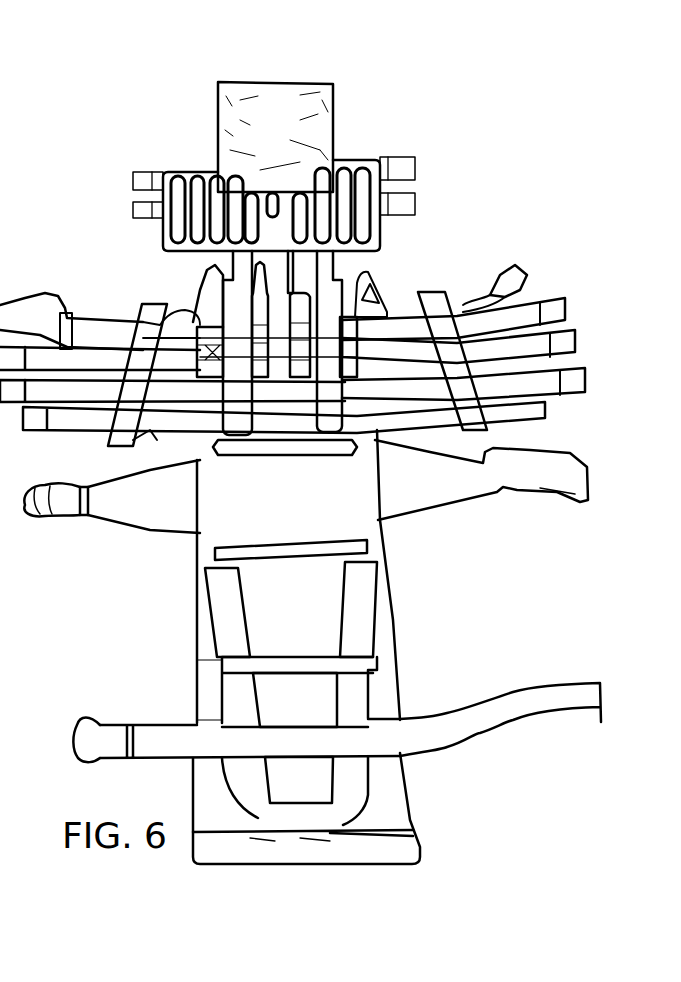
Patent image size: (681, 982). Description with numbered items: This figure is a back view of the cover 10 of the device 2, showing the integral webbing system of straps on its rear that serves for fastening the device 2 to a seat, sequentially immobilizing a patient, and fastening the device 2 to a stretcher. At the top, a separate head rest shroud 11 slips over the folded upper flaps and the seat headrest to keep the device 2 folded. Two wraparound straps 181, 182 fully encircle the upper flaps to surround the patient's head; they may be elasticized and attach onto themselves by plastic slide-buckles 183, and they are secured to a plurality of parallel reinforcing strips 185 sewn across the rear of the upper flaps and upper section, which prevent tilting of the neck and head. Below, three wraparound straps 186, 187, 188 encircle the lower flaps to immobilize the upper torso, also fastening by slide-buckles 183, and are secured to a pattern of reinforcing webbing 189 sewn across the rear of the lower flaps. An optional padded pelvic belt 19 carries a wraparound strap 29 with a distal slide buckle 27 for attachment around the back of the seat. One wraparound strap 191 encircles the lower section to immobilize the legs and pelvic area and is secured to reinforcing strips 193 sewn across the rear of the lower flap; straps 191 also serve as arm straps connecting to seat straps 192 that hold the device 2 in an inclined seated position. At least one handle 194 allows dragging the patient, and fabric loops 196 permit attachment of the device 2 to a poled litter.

The device 2 is at (423, 129).
The head rest shroud 11 is at (275, 137).
The wraparound strap 181 is at (372, 158).
The wraparound strap 182 is at (382, 218).
The plastic slide-buckles 183 is at (452, 212).
The reinforcing strips 185 is at (176, 232).
The wraparound strap 186 is at (528, 300).
The wraparound strap 187 is at (548, 345).
The wraparound strap 188 is at (553, 404).
The reinforcing webbing 189 is at (275, 315).
The wraparound strap 191 is at (509, 263).
The seat straps 192 is at (78, 740).
The reinforcing strips 193 is at (237, 685).
The handle 194 is at (258, 818).
The fabric loops 196 is at (140, 306).
The cover 10 is at (394, 557).
The padded pelvic belt 19 is at (152, 518).
The distal slide buckle 27 is at (30, 516).
The wraparound strap 29 is at (66, 516).